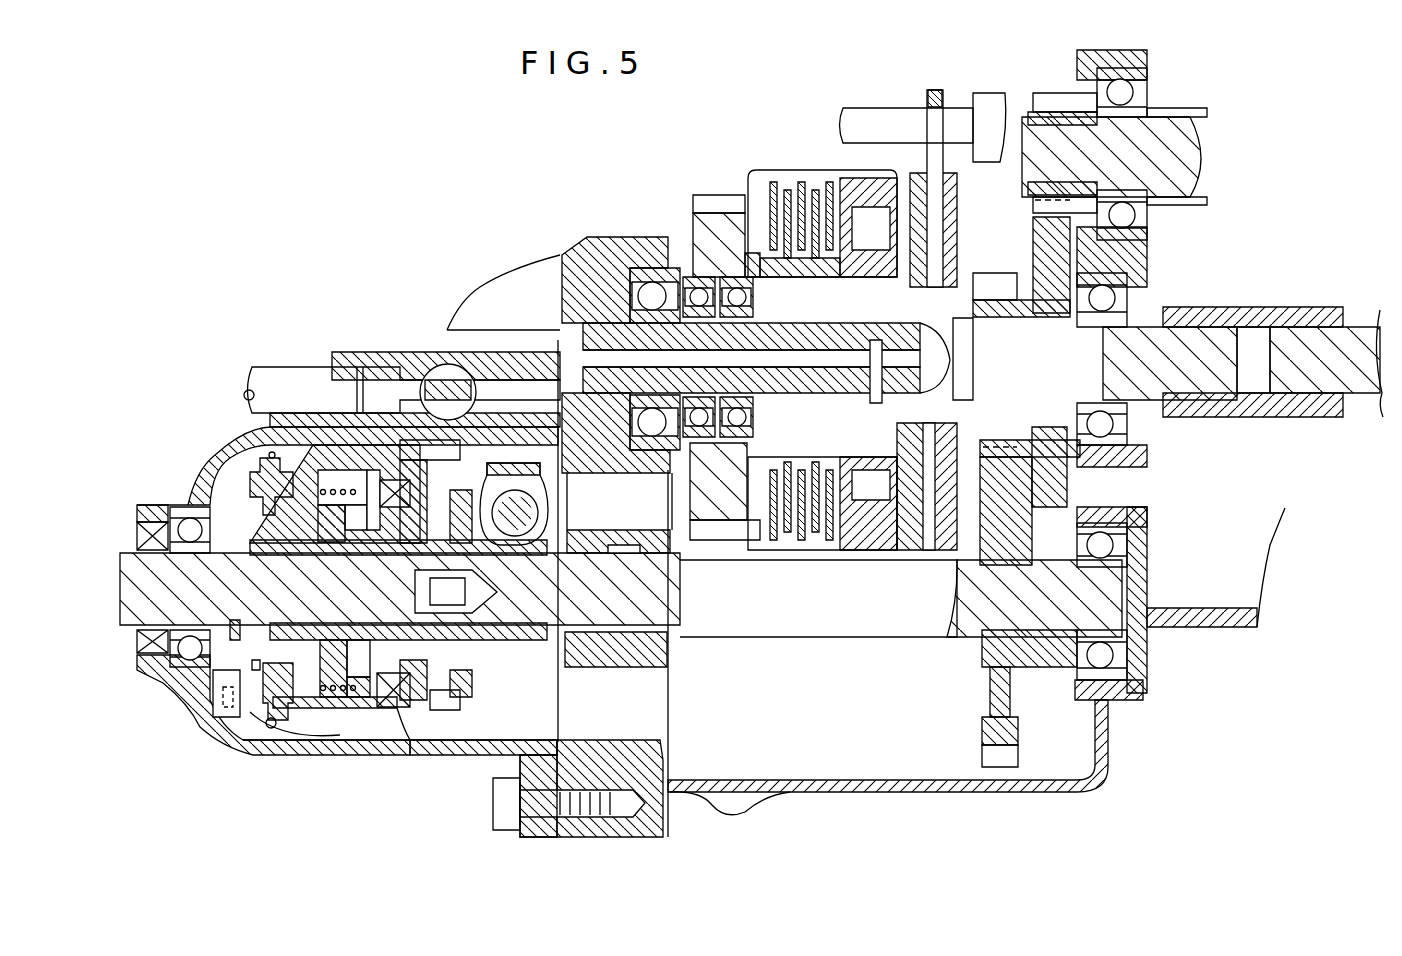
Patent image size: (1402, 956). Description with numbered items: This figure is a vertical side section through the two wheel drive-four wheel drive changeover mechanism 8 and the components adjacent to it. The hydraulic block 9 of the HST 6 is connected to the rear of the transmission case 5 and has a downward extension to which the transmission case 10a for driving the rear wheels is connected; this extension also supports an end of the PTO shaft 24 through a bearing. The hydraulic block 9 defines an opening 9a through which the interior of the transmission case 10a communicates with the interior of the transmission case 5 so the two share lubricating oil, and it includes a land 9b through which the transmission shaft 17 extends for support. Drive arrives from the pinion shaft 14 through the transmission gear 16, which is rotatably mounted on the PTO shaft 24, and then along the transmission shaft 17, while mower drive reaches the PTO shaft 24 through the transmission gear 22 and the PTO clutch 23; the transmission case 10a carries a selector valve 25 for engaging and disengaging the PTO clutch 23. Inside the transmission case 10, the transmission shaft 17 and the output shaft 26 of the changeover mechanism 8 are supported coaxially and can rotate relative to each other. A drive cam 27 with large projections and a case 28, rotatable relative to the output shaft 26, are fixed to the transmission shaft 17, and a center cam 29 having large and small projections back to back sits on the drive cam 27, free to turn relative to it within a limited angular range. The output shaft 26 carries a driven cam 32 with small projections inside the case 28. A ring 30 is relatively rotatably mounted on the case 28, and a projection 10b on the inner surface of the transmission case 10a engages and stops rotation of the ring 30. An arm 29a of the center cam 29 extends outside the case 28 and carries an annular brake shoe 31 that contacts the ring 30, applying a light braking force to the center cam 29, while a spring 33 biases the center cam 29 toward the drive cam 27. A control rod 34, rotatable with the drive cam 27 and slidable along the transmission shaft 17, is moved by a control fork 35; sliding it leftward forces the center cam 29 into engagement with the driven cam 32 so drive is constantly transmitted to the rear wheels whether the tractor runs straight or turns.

The transmission case 5 is at (1113, 748).
The HST 6 is at (500, 282).
The two wheel drive-four wheel drive changeover mechanism 8 is at (367, 737).
The hydraulic block 9 is at (600, 245).
The opening 9a is at (663, 720).
The land 9b is at (672, 666).
The clutch housing 10 is at (192, 480).
The transmission case 10a is at (450, 756).
The projection 10b is at (228, 713).
The pinion shaft 14 is at (1173, 122).
The transmission gear 16 is at (1062, 483).
The transmission shaft 17 is at (873, 627).
The transmission gear 22 is at (712, 200).
The PTO clutch 23 is at (800, 170).
The PTO shaft 24 is at (1190, 345).
The selector valve 25 is at (440, 352).
The output shaft 26 is at (128, 553).
The drive cam 27 is at (440, 704).
The case 28 is at (343, 445).
The center cam 29 is at (372, 710).
The arm 29a is at (290, 713).
The ring 30 is at (245, 492).
The brake shoe 31 is at (263, 715).
The driven cam 32 is at (290, 480).
The spring 33 is at (343, 700).
The control rod 34 is at (472, 686).
The control fork 35 is at (550, 508).